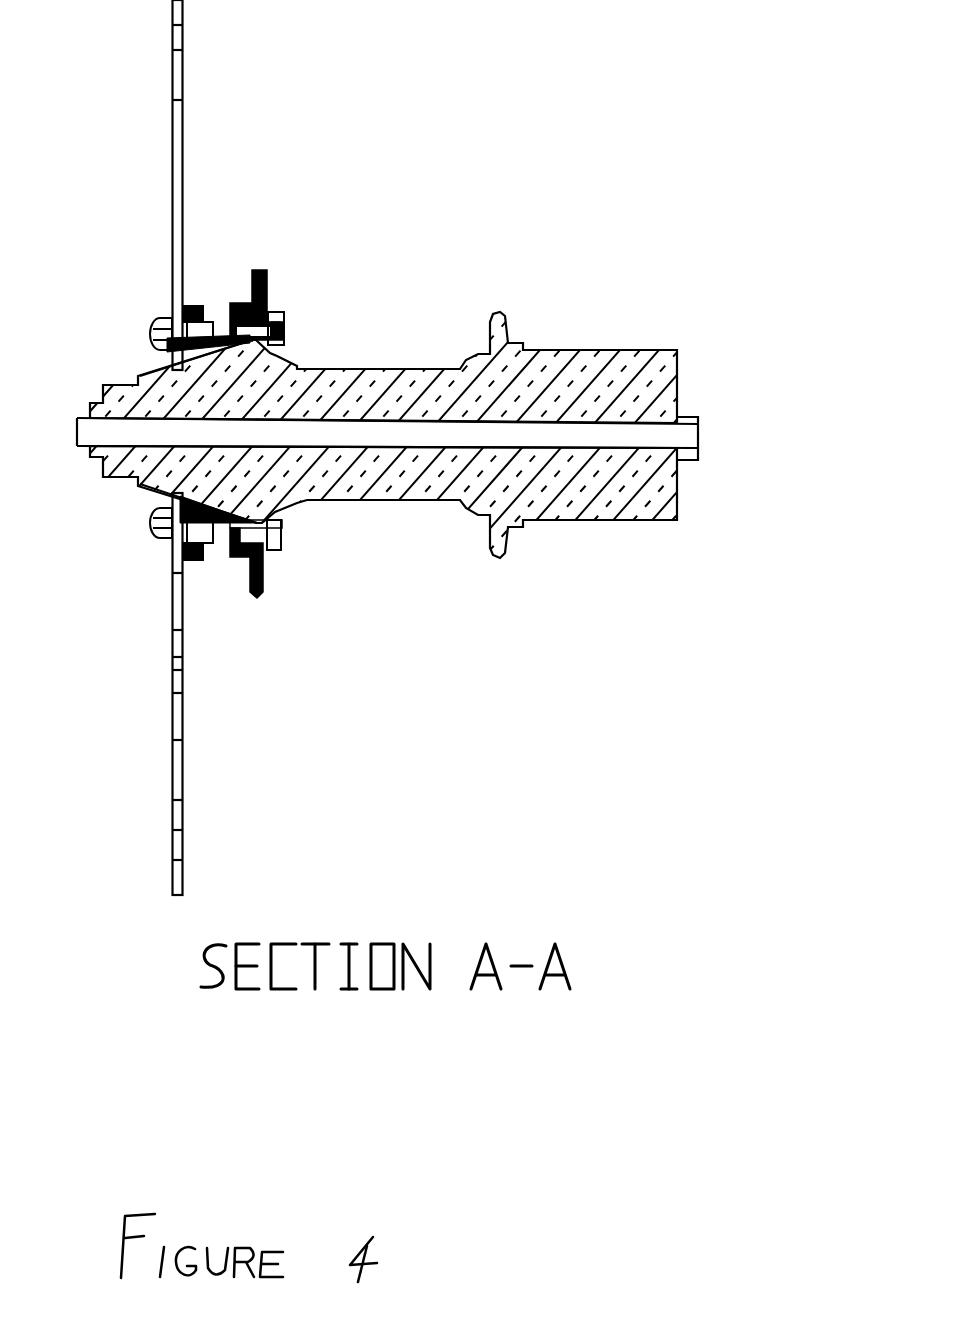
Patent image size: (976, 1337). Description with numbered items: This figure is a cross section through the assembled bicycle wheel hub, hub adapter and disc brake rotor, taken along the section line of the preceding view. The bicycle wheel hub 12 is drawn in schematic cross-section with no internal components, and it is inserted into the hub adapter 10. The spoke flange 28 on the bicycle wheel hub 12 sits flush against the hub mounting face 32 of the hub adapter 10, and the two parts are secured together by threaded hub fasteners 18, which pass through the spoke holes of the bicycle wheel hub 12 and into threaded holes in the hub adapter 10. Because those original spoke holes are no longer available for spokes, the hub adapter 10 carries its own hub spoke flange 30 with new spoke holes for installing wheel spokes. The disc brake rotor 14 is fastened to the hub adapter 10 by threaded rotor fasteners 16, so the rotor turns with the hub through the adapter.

The hub adapter 10 is at (238, 261).
The bicycle wheel hub 12 is at (455, 425).
The disc brake rotor 14 is at (238, 447).
The threaded rotor fasteners 16 is at (146, 544).
The threaded hub fasteners 18 is at (314, 286).
The spoke flange 28 is at (267, 550).
The hub spoke flange 30 is at (267, 268).
The hub mounting face 32 is at (290, 512).